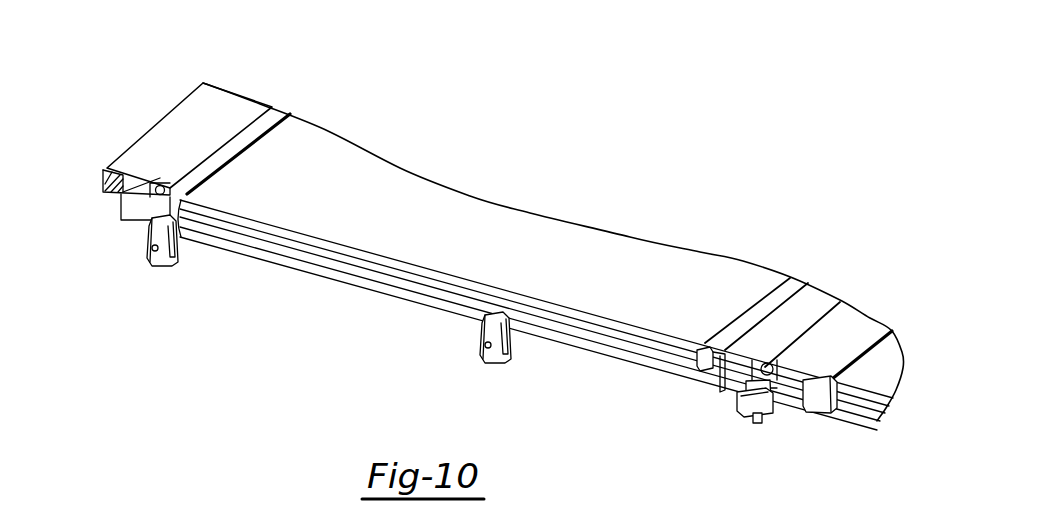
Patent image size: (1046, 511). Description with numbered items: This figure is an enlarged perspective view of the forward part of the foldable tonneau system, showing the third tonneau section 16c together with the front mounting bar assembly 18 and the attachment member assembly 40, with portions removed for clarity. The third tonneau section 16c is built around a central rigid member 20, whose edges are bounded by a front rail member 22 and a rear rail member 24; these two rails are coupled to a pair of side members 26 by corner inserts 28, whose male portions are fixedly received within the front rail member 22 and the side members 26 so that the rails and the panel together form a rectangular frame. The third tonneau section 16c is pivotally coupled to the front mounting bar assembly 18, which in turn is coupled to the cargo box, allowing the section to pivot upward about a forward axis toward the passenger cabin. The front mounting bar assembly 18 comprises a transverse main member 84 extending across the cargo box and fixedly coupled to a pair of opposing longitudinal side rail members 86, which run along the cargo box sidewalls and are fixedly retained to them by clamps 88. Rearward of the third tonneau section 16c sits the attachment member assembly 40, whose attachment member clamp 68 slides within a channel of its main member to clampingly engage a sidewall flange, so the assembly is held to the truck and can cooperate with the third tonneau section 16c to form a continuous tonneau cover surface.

The third tonneau section 16c is at (503, 271).
The front mounting bar assembly 18 is at (187, 143).
The central rigid member 20 is at (585, 236).
The front rail member 22 is at (272, 113).
The rear rail member 24 is at (740, 322).
The side members 26 is at (535, 344).
The corner inserts 28 is at (814, 408).
The attachment member assembly 40 is at (710, 431).
The attachment member clamp 68 is at (746, 415).
The transverse main member 84 is at (198, 117).
The longitudinal side rail members 86 is at (220, 249).
The clamps 88 is at (157, 266).